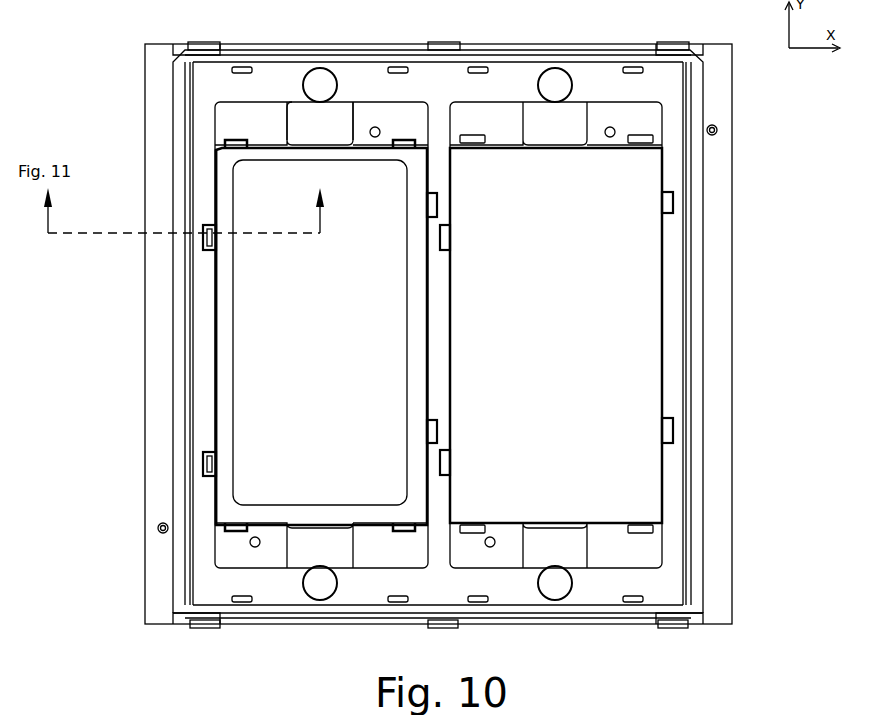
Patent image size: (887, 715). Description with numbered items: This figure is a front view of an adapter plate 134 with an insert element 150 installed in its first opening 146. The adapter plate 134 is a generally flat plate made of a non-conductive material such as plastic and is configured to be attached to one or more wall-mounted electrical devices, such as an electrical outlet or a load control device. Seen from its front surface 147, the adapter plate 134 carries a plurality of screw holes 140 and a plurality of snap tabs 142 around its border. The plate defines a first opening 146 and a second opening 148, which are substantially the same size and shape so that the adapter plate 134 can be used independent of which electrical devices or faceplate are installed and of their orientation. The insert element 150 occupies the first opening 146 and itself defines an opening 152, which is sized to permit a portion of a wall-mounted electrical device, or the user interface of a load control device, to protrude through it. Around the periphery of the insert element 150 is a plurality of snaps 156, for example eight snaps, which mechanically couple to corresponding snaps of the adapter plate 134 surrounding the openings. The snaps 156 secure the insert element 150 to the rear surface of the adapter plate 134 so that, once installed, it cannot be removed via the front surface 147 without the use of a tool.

The adapter plate 134 is at (720, 590).
The screw holes 140 is at (325, 82).
The snap tabs 142 is at (203, 44).
The first opening 146 is at (212, 367).
The front surface 147 is at (660, 585).
The second opening 148 is at (640, 343).
The insert element 150 is at (230, 163).
The opening 152 is at (254, 304).
The snaps 156 is at (203, 462).